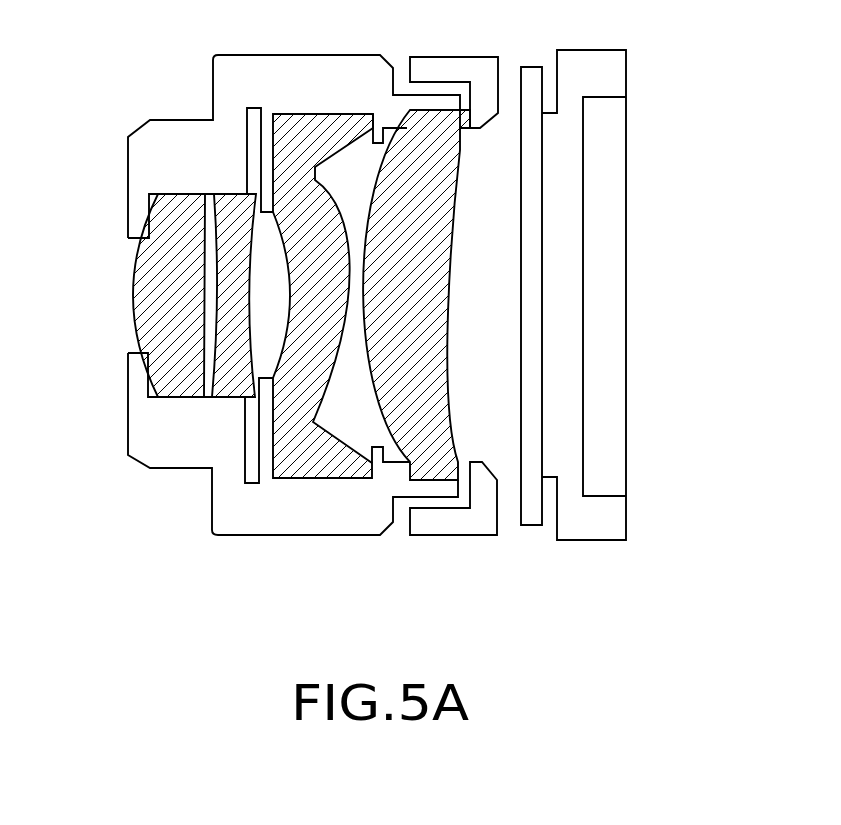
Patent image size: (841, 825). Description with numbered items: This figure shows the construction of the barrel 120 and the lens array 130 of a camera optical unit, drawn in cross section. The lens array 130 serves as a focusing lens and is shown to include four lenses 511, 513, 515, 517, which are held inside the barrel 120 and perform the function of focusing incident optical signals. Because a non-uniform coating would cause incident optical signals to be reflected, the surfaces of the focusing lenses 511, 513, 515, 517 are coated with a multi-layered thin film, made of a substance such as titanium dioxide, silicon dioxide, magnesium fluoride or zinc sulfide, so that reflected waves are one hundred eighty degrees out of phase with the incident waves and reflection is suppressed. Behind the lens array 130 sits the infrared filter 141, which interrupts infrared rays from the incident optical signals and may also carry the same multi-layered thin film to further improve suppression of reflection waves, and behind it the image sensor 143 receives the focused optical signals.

The barrel 120 is at (300, 55).
The lens array 130 is at (437, 472).
The infrared filter 141 is at (530, 67).
The image sensor 143 is at (626, 297).
The lens 511 is at (133, 297).
The lens 513 is at (254, 321).
The lens 515 is at (325, 204).
The lens 517 is at (446, 280).